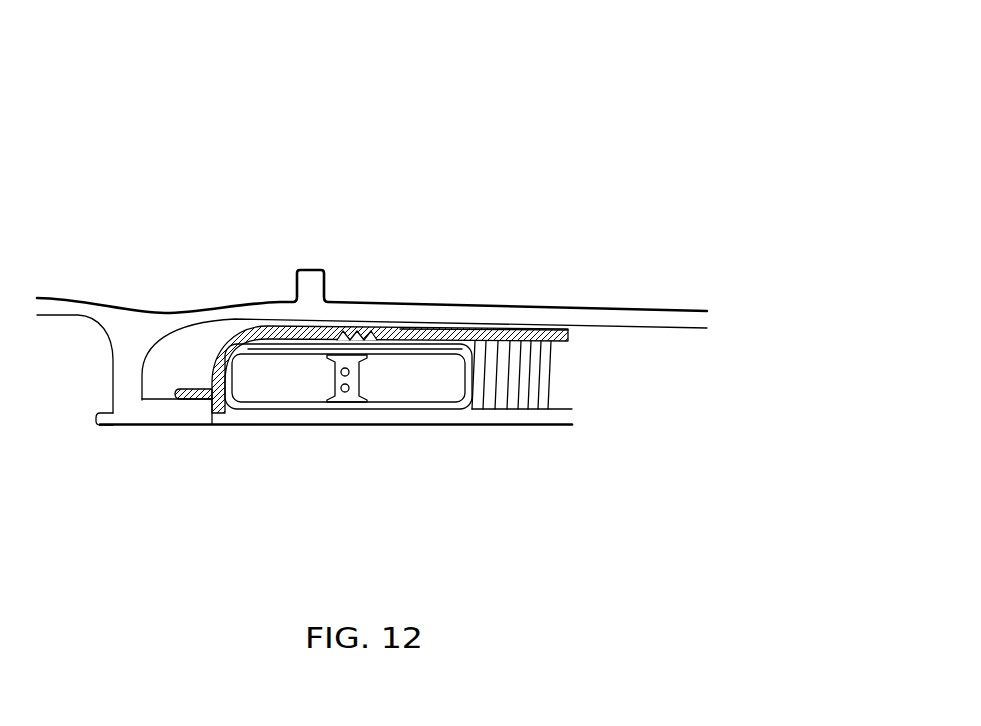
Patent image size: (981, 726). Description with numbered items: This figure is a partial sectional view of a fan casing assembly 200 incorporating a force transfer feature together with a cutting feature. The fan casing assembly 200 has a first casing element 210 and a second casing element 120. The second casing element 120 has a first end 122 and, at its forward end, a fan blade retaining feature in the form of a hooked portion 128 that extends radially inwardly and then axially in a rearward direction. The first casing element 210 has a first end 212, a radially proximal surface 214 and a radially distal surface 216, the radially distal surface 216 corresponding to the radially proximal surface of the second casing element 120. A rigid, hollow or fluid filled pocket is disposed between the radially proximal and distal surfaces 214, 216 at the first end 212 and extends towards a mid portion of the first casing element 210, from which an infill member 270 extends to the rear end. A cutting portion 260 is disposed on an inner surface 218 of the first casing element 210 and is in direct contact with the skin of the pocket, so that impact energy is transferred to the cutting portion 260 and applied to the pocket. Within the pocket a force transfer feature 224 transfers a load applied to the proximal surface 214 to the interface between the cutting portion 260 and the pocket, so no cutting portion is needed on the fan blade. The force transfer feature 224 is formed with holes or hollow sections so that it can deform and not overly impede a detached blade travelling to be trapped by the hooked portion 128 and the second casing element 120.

The fan casing assembly 200 is at (549, 128).
The second casing element 120 is at (523, 316).
The first end 122 is at (133, 425).
The hooked portion 128 is at (185, 428).
The first casing element 210 is at (510, 426).
The first end 212 is at (273, 428).
The radially proximal surface 214 is at (342, 428).
The radially distal surface 216 is at (458, 328).
The inner surface 218 is at (291, 330).
The force transfer feature 224 is at (360, 375).
The cutting portion 260 is at (355, 338).
The infill member 270 is at (540, 380).